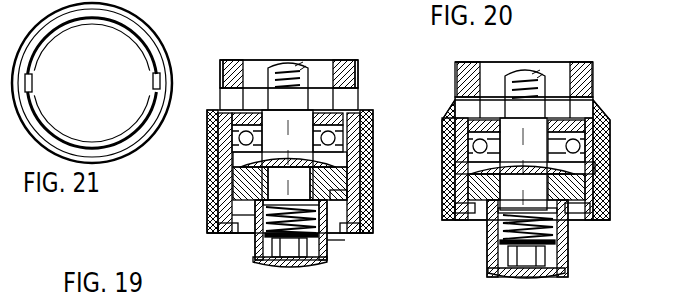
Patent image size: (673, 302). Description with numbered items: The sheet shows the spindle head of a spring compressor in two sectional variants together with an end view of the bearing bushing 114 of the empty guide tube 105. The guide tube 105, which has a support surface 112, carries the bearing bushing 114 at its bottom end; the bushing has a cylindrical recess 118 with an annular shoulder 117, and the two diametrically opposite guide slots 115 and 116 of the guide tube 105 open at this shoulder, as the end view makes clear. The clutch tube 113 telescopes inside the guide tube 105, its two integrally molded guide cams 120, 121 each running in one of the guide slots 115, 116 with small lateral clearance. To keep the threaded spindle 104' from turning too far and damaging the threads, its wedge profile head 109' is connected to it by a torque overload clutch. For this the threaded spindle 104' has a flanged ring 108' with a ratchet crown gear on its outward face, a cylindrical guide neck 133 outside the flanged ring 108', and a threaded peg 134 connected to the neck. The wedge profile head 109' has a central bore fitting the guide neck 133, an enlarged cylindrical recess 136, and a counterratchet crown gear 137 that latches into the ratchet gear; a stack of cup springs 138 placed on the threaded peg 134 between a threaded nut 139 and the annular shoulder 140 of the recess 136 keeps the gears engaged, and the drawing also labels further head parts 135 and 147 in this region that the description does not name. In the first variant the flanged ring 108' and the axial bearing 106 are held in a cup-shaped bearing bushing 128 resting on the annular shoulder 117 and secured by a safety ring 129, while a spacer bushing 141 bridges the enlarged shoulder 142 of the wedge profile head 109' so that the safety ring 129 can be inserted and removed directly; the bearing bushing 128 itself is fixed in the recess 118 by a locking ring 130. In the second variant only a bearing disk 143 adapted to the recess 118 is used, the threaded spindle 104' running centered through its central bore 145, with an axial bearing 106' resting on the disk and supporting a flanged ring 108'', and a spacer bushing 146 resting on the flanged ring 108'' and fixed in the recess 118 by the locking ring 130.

In FIG. 19, the threaded spindle 104' is at (287, 111).
In FIG. 20, the threaded spindle 104' is at (523, 120).
In FIG. 19, the guide tube 105 is at (351, 56).
In FIG. 20, the guide tube 105 is at (582, 58).
In FIG. 19, the axial bearing 106 is at (258, 147).
In FIG. 20, the axial bearing 106' is at (557, 149).
In FIG. 19, the flanged ring 108' is at (377, 172).
In FIG. 20, the flanged ring 108'' is at (618, 169).
In FIG. 19, the wedge profile head 109' is at (341, 242).
In FIG. 19, the support surface 112 is at (212, 112).
In FIG. 20, the support surface 112 is at (596, 105).
In FIG. 19, the clutch tube 113 is at (243, 62).
In FIG. 20, the clutch tube 113 is at (472, 64).
In FIG. 21, the bearing bushing 114 is at (148, 26).
In FIG. 19, the bearing bushing 114 is at (212, 148).
In FIG. 20, the bearing bushing 114 is at (593, 222).
In FIG. 21, the guide slot 115 is at (33, 82).
In FIG. 19, the guide slot 115 is at (226, 62).
In FIG. 21, the guide slot 116 is at (152, 82).
In FIG. 19, the guide slot 116 is at (350, 68).
In FIG. 21, the annular shoulder 117 is at (152, 50).
In FIG. 19, the cylindrical recess 118 is at (250, 245).
In FIG. 20, the cylindrical recess 118 is at (588, 222).
In FIG. 19, the guide cam 120 is at (228, 70).
In FIG. 20, the guide cam 120 is at (458, 76).
In FIG. 19, the guide cam 121 is at (352, 86).
In FIG. 20, the guide cam 121 is at (590, 80).
In FIG. 19, the bearing bushing 128 is at (283, 182).
In FIG. 19, the safety ring 129 is at (238, 228).
In FIG. 19, the locking ring 130 is at (356, 228).
In FIG. 20, the locking ring 130 is at (598, 208).
In FIG. 19, the guide neck 133 is at (236, 190).
In FIG. 20, the guide neck 133 is at (516, 188).
In FIG. 20, the threaded peg 134 is at (560, 245).
In FIG. 19, the spring housing 135 is at (258, 207).
In FIG. 19, the cylindrical recess 136 is at (272, 259).
In FIG. 19, the counterratchet crown gear 137 is at (350, 158).
In FIG. 20, the counterratchet crown gear 137 is at (480, 170).
In FIG. 19, the stack of cup springs 138 is at (348, 242).
In FIG. 20, the stack of cup springs 138 is at (510, 244).
In FIG. 19, the threaded nut 139 is at (290, 263).
In FIG. 20, the threaded nut 139 is at (512, 258).
In FIG. 19, the annular shoulder 140 is at (268, 218).
In FIG. 19, the spacer bushing 141 is at (235, 214).
In FIG. 19, the enlarged shoulder 142 is at (345, 176).
In FIG. 20, the bearing disk 143 is at (590, 125).
In FIG. 20, the central bore 145 is at (466, 110).
In FIG. 20, the spacer bushing 146 is at (470, 220).
In FIG. 19, the end cap 147 is at (320, 263).
In FIG. 20, the end cap 147 is at (548, 276).